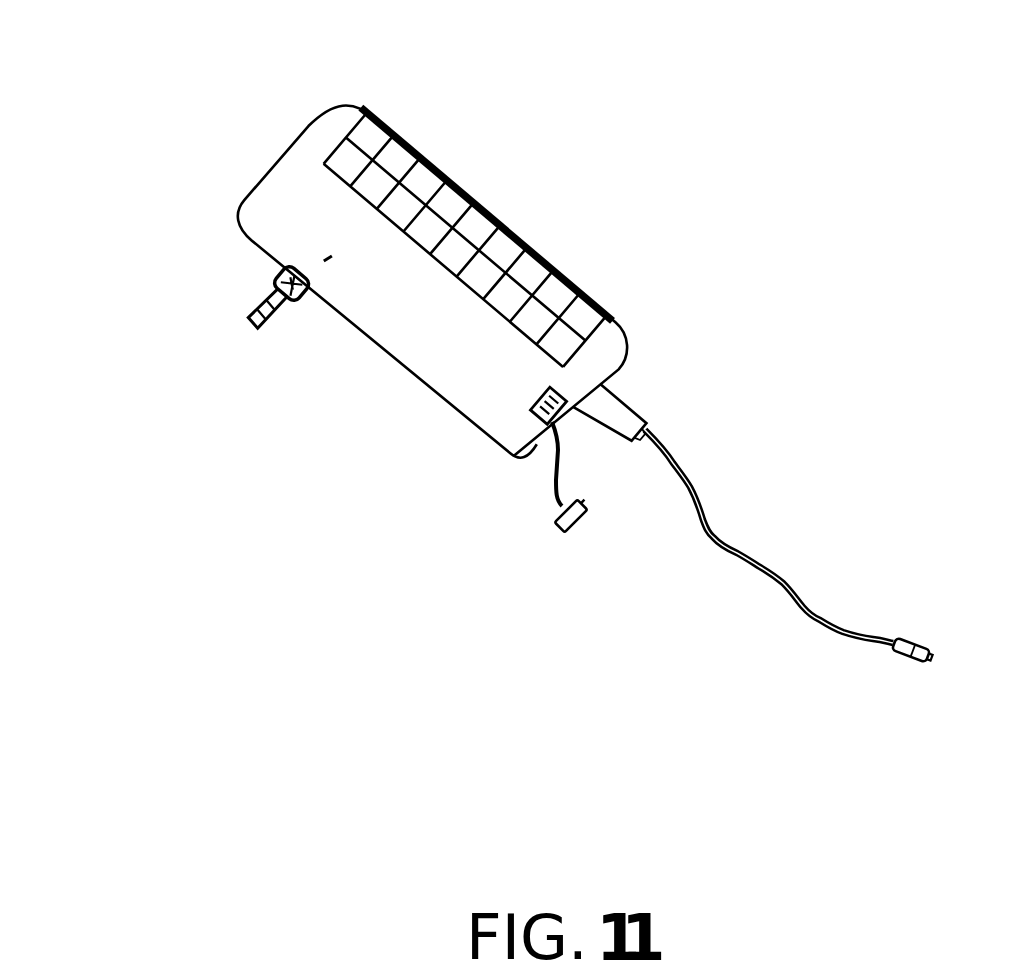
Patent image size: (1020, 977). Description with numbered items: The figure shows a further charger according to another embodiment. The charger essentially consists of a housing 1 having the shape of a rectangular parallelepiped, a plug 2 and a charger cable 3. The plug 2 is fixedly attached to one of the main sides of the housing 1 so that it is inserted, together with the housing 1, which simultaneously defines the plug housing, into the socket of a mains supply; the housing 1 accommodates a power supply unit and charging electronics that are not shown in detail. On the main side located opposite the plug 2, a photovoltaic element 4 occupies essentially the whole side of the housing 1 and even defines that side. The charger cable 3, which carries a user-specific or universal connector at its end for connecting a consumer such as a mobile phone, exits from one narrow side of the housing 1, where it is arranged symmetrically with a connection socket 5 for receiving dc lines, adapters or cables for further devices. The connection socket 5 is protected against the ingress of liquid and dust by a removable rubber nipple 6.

The housing 1 is at (497, 204).
The plug 2 is at (237, 330).
The charger cable 3 is at (766, 557).
The photovoltaic element 4 is at (548, 260).
The connection socket 5 is at (527, 440).
The rubber nipple 6 is at (549, 544).